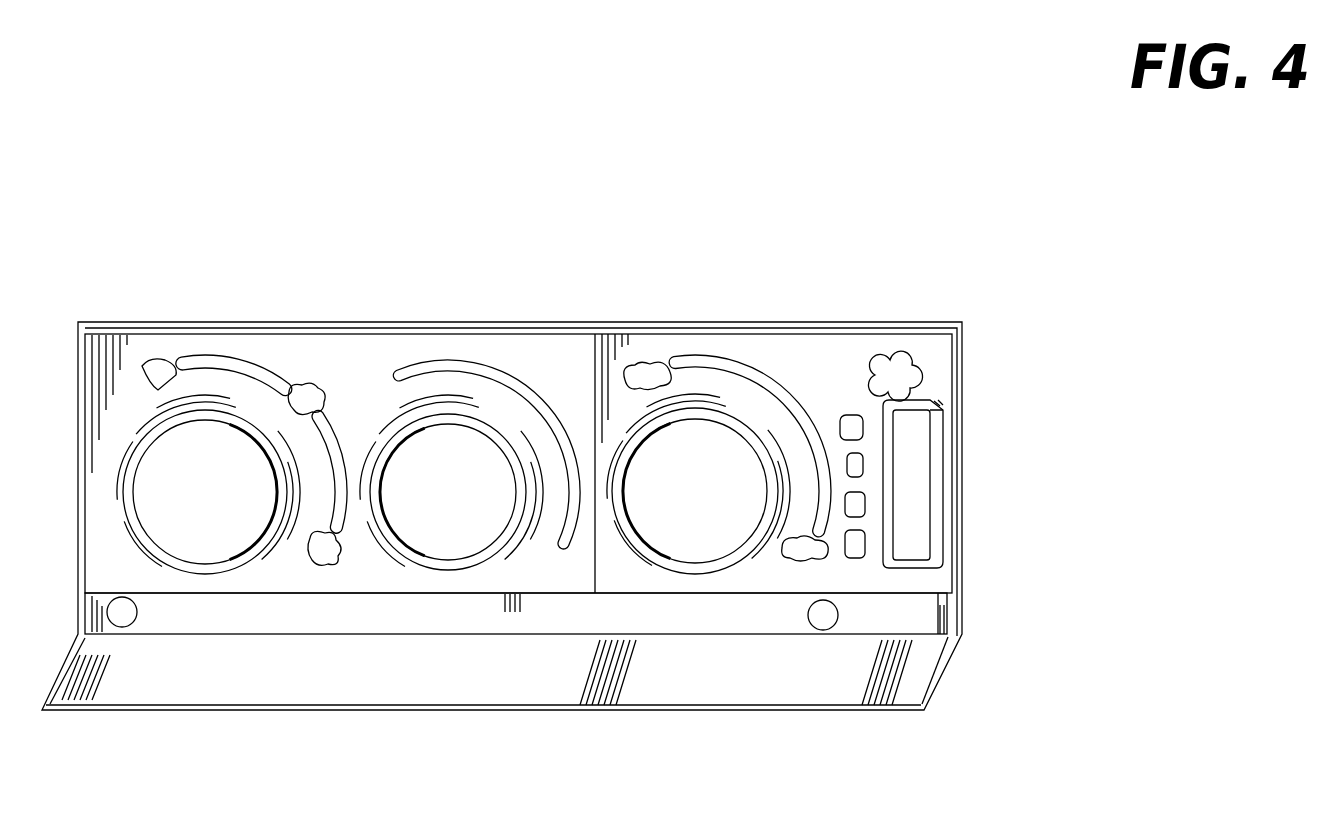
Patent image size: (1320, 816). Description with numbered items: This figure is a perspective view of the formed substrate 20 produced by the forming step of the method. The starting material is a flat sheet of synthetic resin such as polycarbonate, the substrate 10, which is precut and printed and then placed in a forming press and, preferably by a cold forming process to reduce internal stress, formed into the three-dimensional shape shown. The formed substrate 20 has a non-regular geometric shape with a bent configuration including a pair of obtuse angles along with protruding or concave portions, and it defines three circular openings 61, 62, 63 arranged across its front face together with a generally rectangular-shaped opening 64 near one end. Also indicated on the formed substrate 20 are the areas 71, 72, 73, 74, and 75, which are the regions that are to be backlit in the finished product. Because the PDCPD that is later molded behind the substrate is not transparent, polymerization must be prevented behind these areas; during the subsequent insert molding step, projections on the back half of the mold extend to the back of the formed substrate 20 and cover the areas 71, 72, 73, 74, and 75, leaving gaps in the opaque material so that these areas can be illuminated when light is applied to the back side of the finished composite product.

The substrate 10 is at (366, 346).
The formed substrate 20 is at (798, 318).
The circular opening 61 is at (628, 527).
The circular opening 62 is at (383, 517).
The circular opening 63 is at (140, 517).
The rectangular-shaped opening 64 is at (898, 466).
The backlit area 71 is at (340, 533).
The backlit area 72 is at (560, 543).
The backlit area 73 is at (827, 553).
The backlit area 74 is at (945, 580).
The backlit area 75 is at (912, 372).